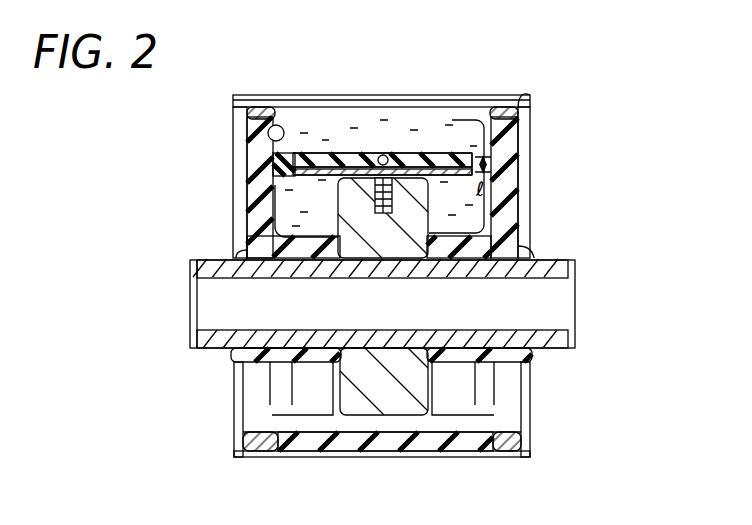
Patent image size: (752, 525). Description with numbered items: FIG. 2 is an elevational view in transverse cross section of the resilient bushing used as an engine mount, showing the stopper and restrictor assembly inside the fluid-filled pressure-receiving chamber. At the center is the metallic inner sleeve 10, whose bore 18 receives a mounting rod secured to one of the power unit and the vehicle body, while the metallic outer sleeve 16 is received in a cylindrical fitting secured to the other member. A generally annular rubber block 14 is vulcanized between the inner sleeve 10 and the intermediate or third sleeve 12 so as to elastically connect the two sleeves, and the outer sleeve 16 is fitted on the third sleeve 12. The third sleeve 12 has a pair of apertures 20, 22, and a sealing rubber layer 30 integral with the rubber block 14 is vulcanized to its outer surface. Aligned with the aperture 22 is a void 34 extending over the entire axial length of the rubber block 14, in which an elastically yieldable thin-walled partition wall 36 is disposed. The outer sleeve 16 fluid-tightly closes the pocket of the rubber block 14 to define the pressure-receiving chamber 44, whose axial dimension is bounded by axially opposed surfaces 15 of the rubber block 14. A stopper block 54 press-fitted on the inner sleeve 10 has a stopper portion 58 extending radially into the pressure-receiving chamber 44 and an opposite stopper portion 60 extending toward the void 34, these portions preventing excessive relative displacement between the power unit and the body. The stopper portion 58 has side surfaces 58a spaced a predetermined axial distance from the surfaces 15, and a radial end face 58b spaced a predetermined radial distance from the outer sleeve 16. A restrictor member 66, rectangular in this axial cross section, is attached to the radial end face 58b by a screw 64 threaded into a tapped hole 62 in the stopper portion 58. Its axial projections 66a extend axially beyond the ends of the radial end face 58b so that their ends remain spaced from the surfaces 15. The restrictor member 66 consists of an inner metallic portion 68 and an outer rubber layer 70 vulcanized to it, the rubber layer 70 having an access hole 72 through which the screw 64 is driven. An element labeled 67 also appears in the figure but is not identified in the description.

The inner sleeve 10 is at (215, 268).
The third sleeve 12 is at (241, 113).
The rubber block 14 is at (541, 173).
The axially opposed surfaces 15 is at (264, 133).
The outer sleeve 16 is at (531, 95).
The bore 18 is at (213, 265).
The aperture 20 is at (281, 95).
The aperture 22 is at (279, 451).
The sealing rubber layer 30 is at (243, 446).
The void 34 is at (500, 435).
The partition wall 36 is at (315, 402).
The pressure-receiving chamber 44 is at (476, 107).
The stopper block 54 is at (445, 224).
The stopper portion 58 is at (343, 205).
The side surfaces 58a is at (345, 199).
The radial end face 58b is at (432, 128).
The stopper portion 60 is at (393, 397).
The tapped hole 62 is at (398, 160).
The screw 64 is at (384, 213).
The restrictor member 66 is at (440, 153).
The axial projections 66a is at (330, 140).
The housing bottom flange 67 is at (288, 160).
The inner metallic portion 68 is at (297, 174).
The outer rubber layer 70 is at (318, 153).
The access hole 72 is at (366, 169).